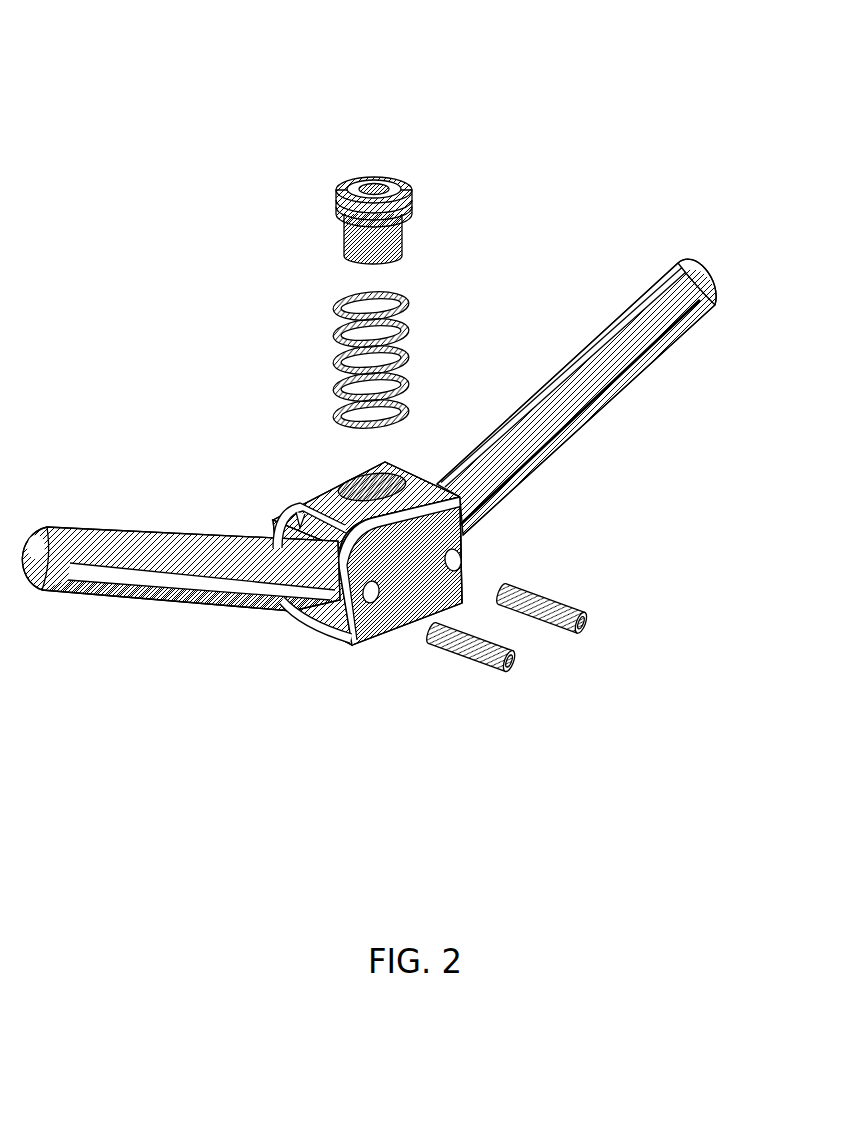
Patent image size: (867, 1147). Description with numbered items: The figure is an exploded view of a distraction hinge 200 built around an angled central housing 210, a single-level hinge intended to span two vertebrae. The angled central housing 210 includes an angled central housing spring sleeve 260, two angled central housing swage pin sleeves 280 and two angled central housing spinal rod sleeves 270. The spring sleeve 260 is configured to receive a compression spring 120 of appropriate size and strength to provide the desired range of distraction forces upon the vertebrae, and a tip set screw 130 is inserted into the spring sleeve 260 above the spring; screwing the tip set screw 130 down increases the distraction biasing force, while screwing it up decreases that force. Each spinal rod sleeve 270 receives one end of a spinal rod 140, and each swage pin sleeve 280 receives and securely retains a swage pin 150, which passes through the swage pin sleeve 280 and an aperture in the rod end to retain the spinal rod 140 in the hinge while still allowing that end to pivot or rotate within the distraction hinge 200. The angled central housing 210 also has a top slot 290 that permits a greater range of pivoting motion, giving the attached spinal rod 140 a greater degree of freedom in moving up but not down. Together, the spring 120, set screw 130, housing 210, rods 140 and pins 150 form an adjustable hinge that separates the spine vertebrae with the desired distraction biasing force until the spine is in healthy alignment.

The distraction hinge 200 is at (122, 88).
The tip set screw 130 is at (306, 211).
The compression spring 120 is at (302, 331).
The spinal rod 140 is at (183, 535).
The angled central housing spring sleeve 260 is at (350, 487).
The slot 290 is at (296, 520).
The angled central housing spinal rod sleeve 270 is at (482, 540).
The angled central housing swage pin sleeve 280 is at (462, 560).
The angled central housing 210 is at (406, 653).
The swage pin 150 is at (537, 687).